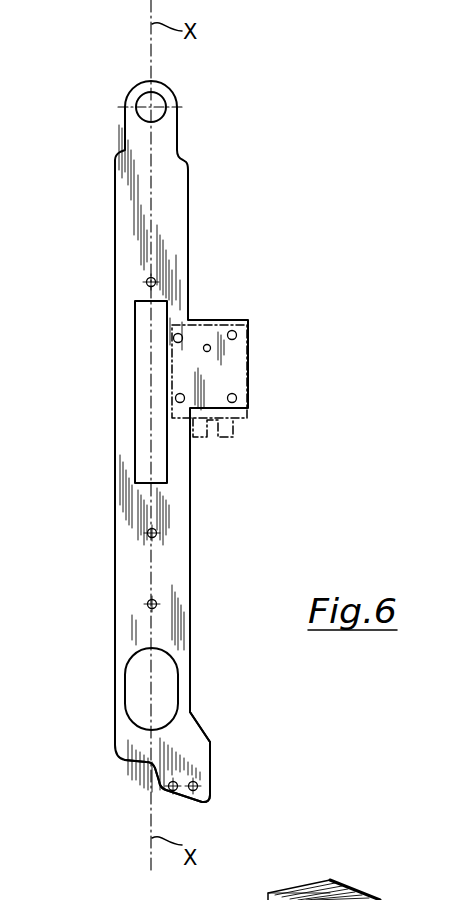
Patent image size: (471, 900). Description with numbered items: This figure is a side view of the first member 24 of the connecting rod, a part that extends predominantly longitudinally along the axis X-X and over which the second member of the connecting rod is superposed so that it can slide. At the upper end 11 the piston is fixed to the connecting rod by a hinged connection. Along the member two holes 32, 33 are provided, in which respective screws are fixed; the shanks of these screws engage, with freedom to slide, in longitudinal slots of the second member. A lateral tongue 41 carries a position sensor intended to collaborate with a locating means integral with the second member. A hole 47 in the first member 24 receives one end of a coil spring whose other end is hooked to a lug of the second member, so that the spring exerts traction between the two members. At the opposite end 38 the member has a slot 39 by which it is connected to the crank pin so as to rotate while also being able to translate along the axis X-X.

The end of the connecting rod 11 is at (163, 137).
The first member 24 is at (178, 199).
The hole 47 is at (158, 277).
The lateral tongue 41 is at (240, 348).
The hole 32 is at (147, 540).
The hole 33 is at (147, 604).
The slot 39 is at (163, 693).
The end of the first member 38 is at (198, 765).